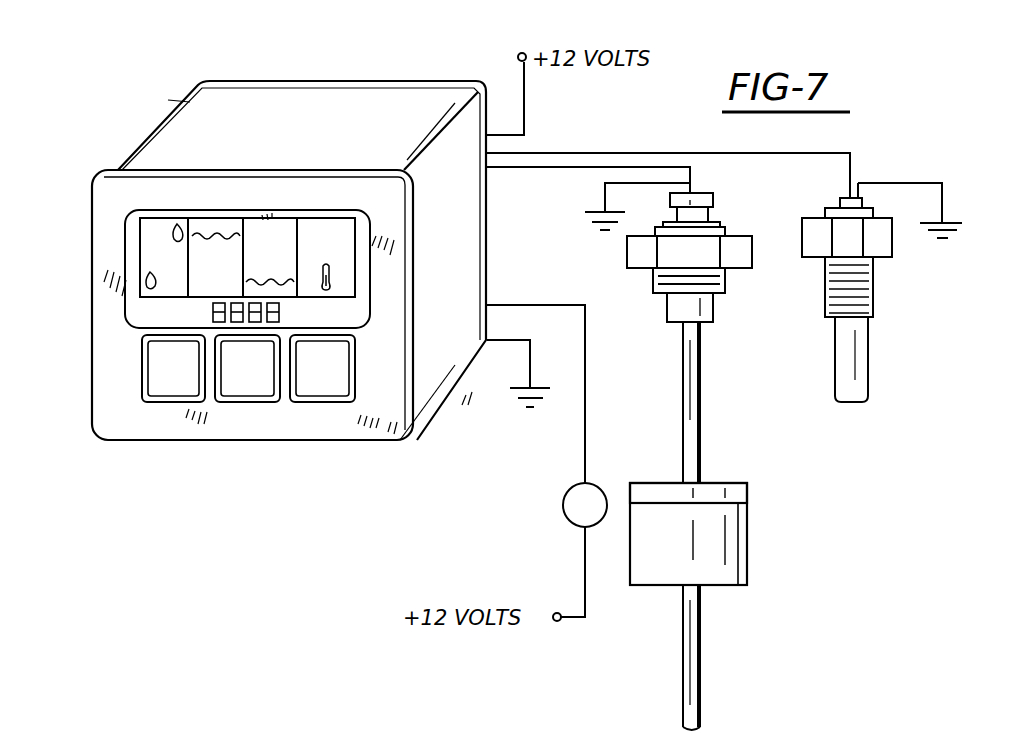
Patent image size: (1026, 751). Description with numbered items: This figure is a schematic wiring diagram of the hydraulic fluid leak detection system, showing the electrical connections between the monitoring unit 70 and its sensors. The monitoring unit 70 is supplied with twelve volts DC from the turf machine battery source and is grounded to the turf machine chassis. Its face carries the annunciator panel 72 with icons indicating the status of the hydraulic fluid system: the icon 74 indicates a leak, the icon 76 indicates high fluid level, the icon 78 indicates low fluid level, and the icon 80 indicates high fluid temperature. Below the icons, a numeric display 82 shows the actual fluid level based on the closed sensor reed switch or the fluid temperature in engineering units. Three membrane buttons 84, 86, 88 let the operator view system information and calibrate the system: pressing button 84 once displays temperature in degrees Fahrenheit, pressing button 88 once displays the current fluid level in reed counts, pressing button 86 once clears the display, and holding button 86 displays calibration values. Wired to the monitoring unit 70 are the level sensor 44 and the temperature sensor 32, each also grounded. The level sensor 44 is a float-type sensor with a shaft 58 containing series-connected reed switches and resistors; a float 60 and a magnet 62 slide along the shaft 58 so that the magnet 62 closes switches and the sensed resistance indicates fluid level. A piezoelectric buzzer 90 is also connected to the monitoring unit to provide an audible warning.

The monitoring unit 70 is at (163, 118).
The annunciator panel 72 is at (126, 410).
The icon 74 is at (170, 232).
The icon 76 is at (222, 232).
The icon 78 is at (279, 230).
The icon 80 is at (327, 230).
The numeric display 82 is at (307, 313).
The membrane button 84 is at (172, 385).
The membrane button 86 is at (245, 385).
The membrane button 88 is at (335, 385).
The piezo buzzer 90 is at (563, 500).
The level sensor 44 is at (743, 238).
The shaft 58 is at (692, 365).
The float 60 is at (738, 523).
The magnet 62 is at (747, 493).
The temperature sensor 32 is at (887, 238).